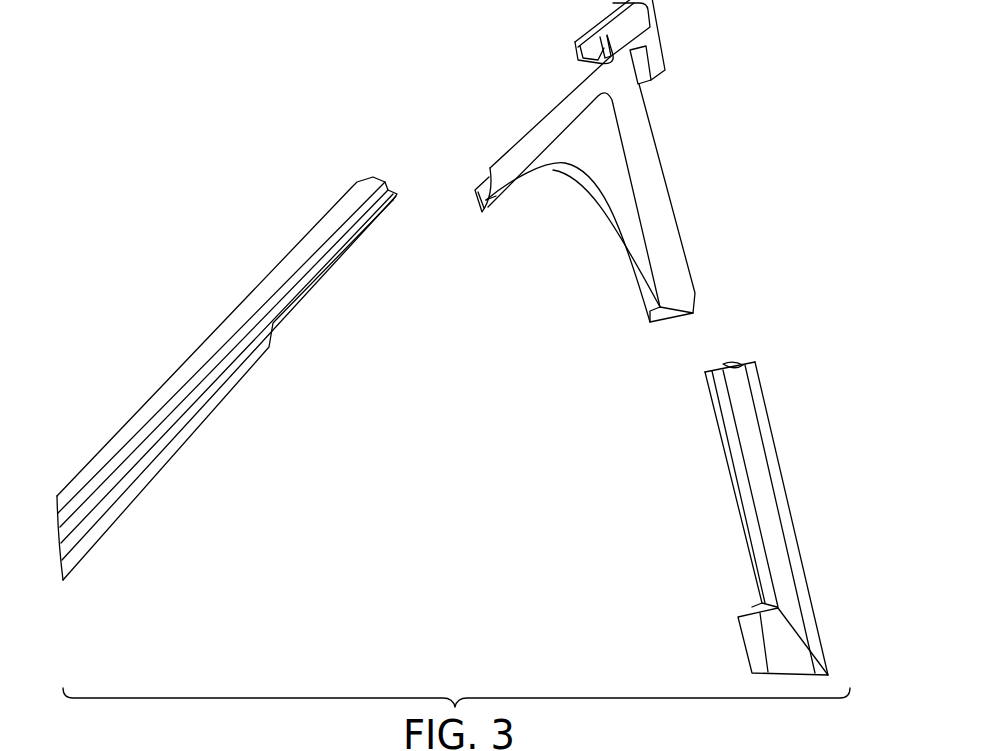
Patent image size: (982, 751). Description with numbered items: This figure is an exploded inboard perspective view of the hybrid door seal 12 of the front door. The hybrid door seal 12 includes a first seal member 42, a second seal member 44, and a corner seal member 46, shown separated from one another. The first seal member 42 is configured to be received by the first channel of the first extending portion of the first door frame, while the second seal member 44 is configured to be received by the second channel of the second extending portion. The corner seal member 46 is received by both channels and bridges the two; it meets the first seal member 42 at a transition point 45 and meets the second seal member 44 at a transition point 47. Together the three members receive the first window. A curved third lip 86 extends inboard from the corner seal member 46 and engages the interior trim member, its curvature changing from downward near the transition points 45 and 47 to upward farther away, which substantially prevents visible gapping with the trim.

The hybrid door seal 12 is at (298, 88).
The first seal member 42 is at (171, 374).
The second seal member 44 is at (783, 456).
The transition point 45 is at (488, 173).
The corner seal member 46 is at (665, 163).
The transition point 47 is at (680, 323).
The third lip 86 is at (478, 213).